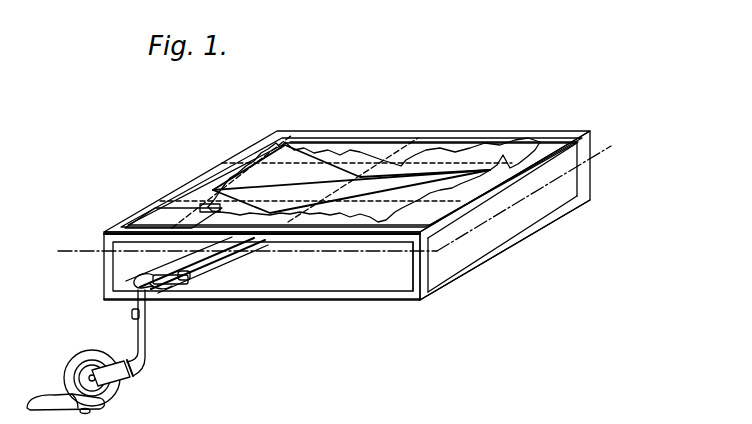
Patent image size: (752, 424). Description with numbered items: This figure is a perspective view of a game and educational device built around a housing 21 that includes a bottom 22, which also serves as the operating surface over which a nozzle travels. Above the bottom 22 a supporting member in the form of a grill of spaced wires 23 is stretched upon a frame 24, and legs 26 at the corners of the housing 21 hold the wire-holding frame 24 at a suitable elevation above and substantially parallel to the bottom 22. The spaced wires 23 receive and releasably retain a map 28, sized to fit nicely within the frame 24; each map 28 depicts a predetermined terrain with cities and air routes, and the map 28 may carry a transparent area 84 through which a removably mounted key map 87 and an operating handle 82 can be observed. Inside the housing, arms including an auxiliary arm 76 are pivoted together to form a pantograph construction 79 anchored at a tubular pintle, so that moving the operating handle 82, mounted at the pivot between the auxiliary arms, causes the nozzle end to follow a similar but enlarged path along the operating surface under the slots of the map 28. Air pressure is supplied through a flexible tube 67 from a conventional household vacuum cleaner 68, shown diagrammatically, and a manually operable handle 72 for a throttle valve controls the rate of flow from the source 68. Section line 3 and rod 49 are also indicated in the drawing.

The section line 3- 3 is at (67, 259).
The housing 21 is at (600, 175).
The bottom 22 is at (522, 221).
The spaced wires 23 is at (497, 153).
The frame 24 is at (390, 134).
The legs 26 is at (426, 272).
The map 28 is at (316, 148).
The rod 49 is at (178, 262).
The flexible tube 67 is at (147, 344).
The vacuum cleaner 68 is at (128, 388).
The manually operable handle 72 is at (131, 315).
The auxiliary arm 76 is at (228, 257).
The pantograph construction 79 is at (274, 256).
The operating handle 82 is at (186, 279).
The transparent area 84 is at (150, 219).
The key map 87 is at (174, 283).